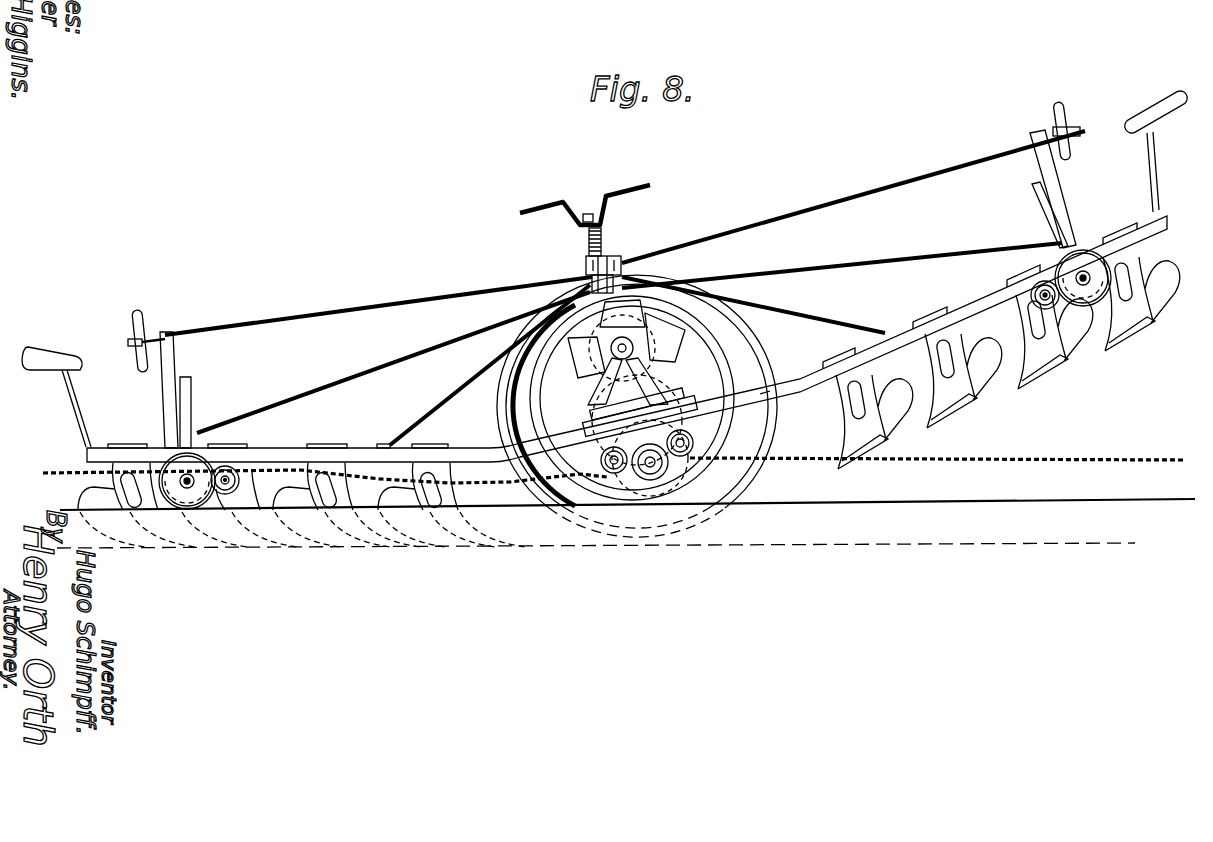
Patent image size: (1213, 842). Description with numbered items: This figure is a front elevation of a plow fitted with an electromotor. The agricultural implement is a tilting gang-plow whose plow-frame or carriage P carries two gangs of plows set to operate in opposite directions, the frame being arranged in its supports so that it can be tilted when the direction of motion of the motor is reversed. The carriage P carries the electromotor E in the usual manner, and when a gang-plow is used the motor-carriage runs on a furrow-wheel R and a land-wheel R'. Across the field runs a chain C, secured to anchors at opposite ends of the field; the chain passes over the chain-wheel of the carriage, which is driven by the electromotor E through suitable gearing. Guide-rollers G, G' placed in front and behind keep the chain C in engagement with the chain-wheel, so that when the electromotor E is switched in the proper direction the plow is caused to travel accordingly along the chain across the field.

The chain C is at (613, 458).
The furrow-wheel R is at (627, 339).
The land-wheel R' is at (756, 421).
The carriage P is at (853, 232).
The electromotor E is at (622, 382).
The guide-roller G is at (641, 445).
The guide-roller G' is at (653, 458).
The gauge wheel h is at (243, 485).